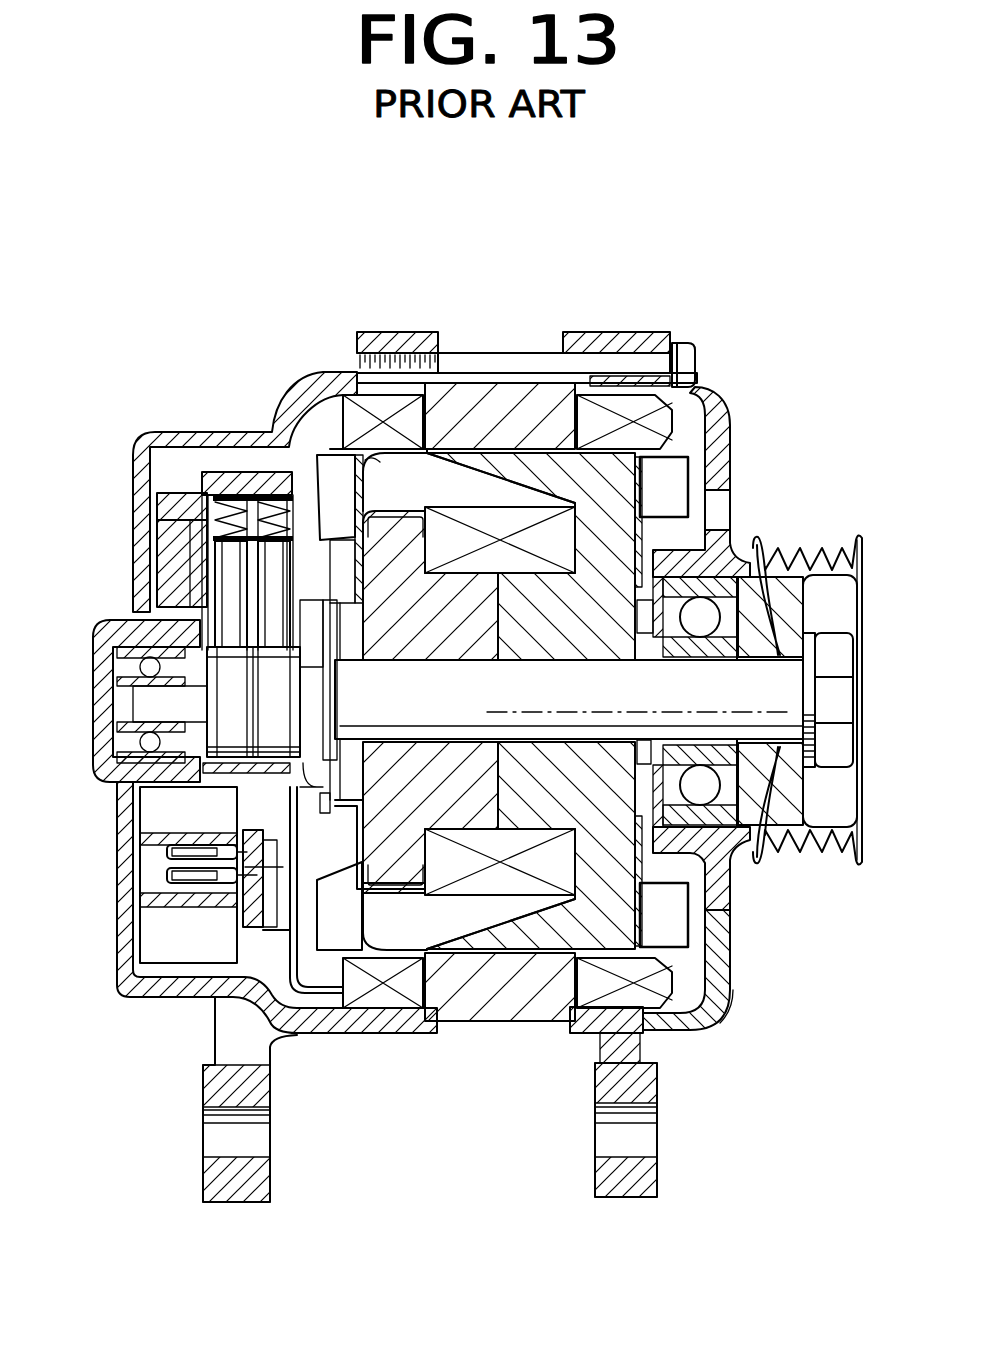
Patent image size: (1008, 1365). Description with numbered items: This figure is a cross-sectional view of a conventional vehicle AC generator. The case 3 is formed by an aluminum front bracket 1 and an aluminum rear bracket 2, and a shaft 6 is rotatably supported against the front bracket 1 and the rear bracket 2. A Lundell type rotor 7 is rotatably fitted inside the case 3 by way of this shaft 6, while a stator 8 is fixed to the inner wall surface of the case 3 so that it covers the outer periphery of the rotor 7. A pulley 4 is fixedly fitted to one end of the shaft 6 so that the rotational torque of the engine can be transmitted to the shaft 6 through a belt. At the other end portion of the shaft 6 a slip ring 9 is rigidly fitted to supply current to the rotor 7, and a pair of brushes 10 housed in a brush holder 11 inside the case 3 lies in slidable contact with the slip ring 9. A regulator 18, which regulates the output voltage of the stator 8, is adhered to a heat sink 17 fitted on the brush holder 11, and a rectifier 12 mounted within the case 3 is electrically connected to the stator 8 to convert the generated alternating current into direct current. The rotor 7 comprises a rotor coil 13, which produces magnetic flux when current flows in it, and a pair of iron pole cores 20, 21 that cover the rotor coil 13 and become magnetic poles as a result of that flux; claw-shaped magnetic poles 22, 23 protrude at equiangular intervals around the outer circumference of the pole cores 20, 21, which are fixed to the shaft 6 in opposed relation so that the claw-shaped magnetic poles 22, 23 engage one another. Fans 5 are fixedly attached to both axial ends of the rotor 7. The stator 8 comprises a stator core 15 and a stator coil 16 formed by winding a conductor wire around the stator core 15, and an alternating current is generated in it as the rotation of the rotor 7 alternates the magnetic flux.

The front bracket 1 is at (733, 968).
The rear bracket 2 is at (157, 997).
The case 3 is at (720, 1023).
The pulley 4 is at (818, 855).
The fans 5 is at (670, 477).
The shaft 6 is at (787, 695).
The rotor 7 is at (476, 807).
The stator 8 is at (550, 610).
The slip ring 9 is at (228, 723).
The brushes 10 is at (230, 597).
The brush holder 11 is at (250, 483).
The rectifier 12 is at (173, 938).
The rotor coil 13 is at (490, 890).
The stator core 15 is at (510, 387).
The stator coil 16 is at (383, 397).
The heat sink 17 is at (167, 533).
The regulator 18 is at (192, 507).
The pole core 20 is at (537, 940).
The pole core 21 is at (403, 930).
The claw-shaped magnetic poles 22 is at (650, 420).
The claw-shaped magnetic poles 23 is at (383, 467).